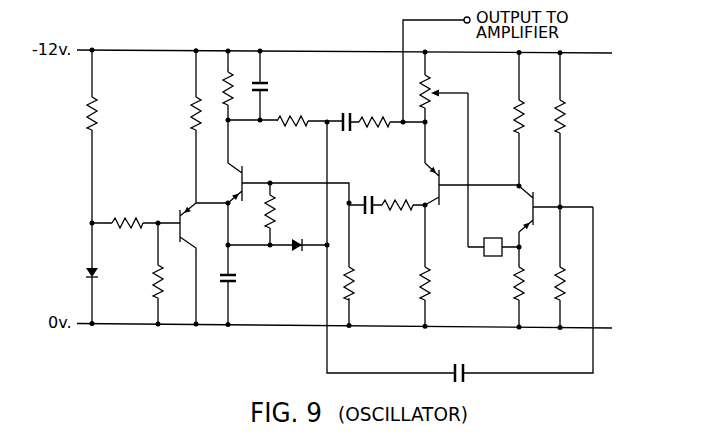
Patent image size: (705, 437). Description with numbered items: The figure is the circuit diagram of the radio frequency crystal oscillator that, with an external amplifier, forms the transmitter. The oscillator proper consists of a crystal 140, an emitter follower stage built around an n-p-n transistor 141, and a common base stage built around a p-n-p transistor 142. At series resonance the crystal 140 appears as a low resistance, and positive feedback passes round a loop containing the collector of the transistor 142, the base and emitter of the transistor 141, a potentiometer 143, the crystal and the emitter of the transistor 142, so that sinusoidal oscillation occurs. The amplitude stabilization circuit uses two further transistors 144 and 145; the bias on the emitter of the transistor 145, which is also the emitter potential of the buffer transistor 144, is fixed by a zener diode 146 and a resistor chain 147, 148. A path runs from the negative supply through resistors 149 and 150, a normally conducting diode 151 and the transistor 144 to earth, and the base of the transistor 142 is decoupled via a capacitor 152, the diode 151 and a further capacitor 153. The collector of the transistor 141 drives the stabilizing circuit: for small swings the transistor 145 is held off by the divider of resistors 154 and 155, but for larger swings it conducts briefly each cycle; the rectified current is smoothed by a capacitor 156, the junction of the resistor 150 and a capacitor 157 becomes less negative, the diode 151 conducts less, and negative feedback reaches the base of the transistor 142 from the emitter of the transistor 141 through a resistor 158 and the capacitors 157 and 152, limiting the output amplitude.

The crystal 140 is at (491, 256).
The transistor 141 is at (430, 194).
The transistor 142 is at (525, 215).
The potentiometer 143 is at (431, 90).
The transistor 144 is at (213, 231).
The transistor 145 is at (234, 191).
The zener diode 146 is at (96, 270).
The resistor 147 is at (128, 219).
The resistor 148 is at (155, 287).
The resistor 149 is at (227, 88).
The resistor 150 is at (292, 119).
The diode 151 is at (300, 252).
The capacitor 152 is at (464, 370).
The capacitor 153 is at (234, 283).
The resistor 154 is at (274, 214).
The resistor 155 is at (352, 278).
The capacitor 156 is at (262, 85).
The capacitor 157 is at (350, 129).
The resistor 158 is at (378, 118).